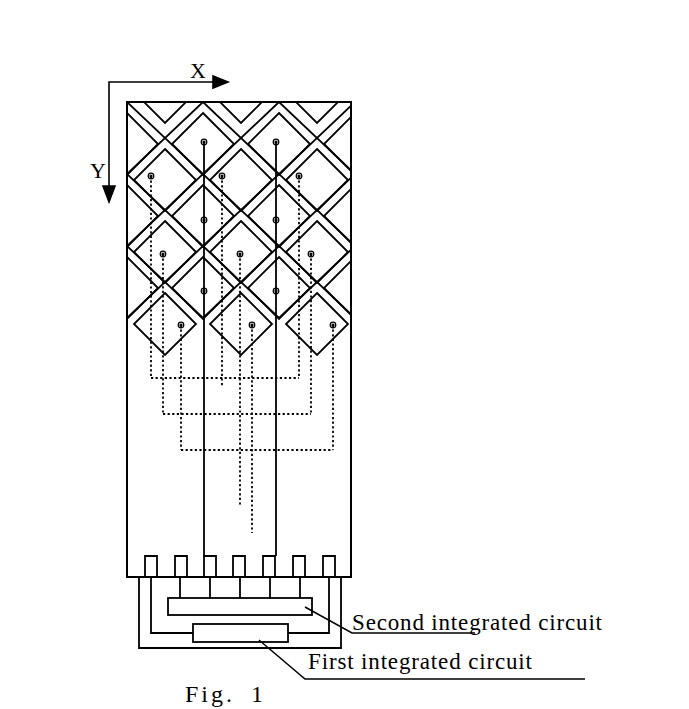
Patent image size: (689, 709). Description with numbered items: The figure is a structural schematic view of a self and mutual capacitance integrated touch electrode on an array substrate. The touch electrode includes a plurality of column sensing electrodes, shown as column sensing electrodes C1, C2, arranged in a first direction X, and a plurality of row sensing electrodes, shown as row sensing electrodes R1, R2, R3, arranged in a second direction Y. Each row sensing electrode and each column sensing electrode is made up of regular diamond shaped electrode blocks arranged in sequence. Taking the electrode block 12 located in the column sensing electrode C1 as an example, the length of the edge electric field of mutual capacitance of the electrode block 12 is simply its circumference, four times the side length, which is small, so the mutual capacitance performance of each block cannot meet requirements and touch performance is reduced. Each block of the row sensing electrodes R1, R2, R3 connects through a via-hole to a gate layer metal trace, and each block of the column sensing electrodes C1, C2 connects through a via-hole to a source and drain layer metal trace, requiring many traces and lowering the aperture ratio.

The electrode block 12 is at (291, 320).
The column sensing electrode C1 is at (190, 347).
The column sensing electrode C2 is at (289, 347).
The row sensing electrode R1 is at (225, 291).
The row sensing electrode R2 is at (237, 381).
The row sensing electrode R3 is at (257, 431).